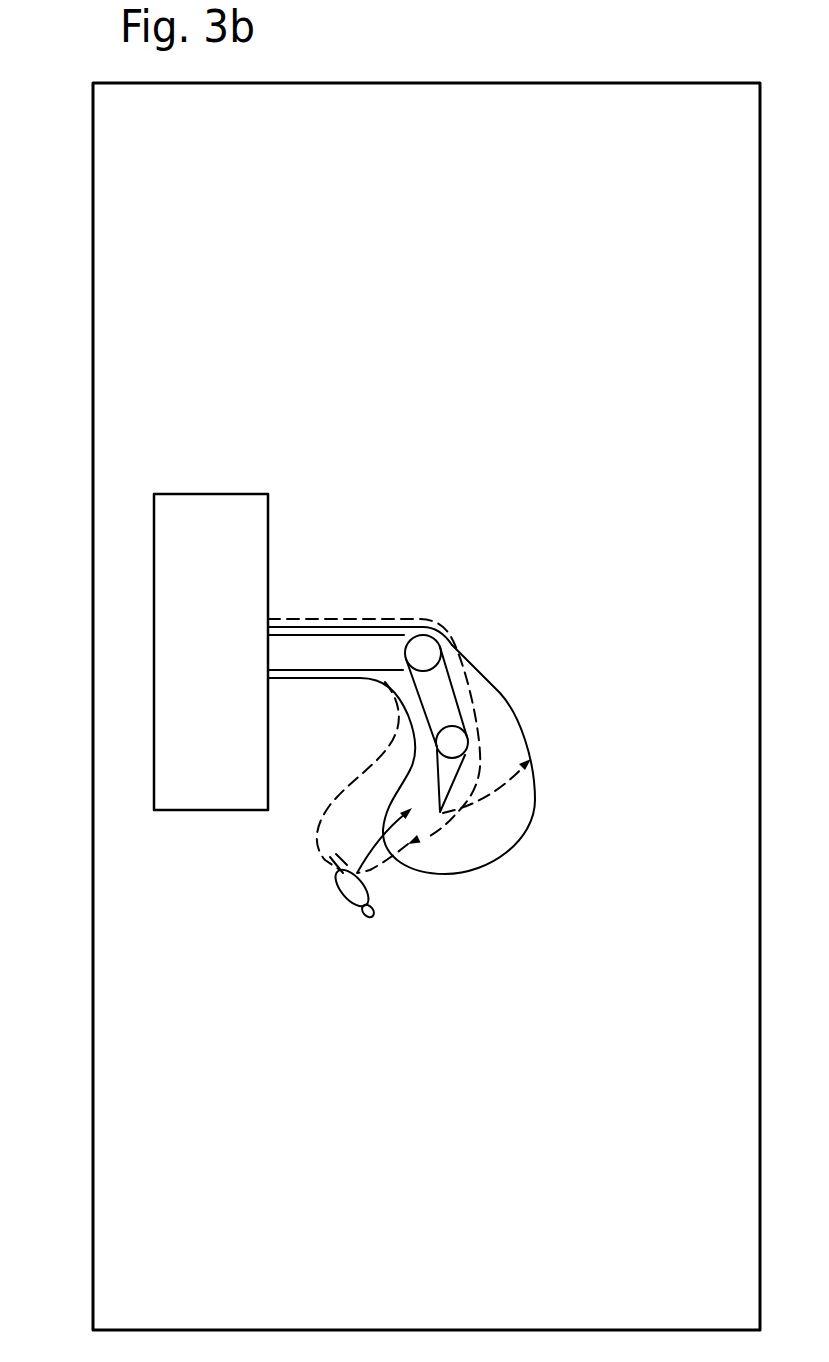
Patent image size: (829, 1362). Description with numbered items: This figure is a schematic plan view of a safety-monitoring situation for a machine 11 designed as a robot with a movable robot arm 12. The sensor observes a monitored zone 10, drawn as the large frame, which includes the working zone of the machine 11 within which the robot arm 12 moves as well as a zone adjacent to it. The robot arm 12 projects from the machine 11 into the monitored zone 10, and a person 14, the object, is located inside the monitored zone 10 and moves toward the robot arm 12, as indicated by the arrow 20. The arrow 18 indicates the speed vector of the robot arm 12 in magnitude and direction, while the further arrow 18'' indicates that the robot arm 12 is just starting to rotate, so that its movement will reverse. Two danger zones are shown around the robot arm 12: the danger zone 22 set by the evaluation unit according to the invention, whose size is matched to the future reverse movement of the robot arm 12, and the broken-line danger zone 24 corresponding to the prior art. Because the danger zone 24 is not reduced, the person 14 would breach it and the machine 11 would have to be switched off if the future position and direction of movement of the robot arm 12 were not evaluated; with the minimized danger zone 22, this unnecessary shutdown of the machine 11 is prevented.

The monitored zone 10 is at (652, 108).
The machine 11 is at (140, 739).
The robot arm 12 is at (358, 645).
The person 14 is at (340, 903).
The arrow 18 is at (374, 765).
The arrow 18'' is at (517, 796).
The arrow 20 is at (360, 863).
The danger zone 22 is at (503, 690).
The danger zone 24 is at (318, 847).